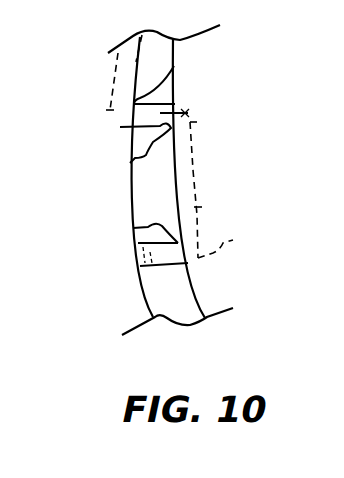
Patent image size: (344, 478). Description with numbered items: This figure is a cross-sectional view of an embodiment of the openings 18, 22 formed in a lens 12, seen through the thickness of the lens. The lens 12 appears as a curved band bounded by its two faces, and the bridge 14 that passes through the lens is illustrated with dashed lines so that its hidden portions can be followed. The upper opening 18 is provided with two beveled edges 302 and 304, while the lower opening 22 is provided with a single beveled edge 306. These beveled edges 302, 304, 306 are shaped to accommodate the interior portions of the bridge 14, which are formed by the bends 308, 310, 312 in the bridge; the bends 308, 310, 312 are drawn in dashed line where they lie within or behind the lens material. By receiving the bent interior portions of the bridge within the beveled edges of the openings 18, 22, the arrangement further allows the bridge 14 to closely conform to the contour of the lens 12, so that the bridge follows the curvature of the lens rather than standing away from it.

The lens 12 is at (233, 282).
The bridge 14 is at (200, 205).
The opening 18 is at (225, 90).
The opening 22 is at (138, 255).
The beveled edge 302 is at (200, 60).
The beveled edge 304 is at (97, 172).
The beveled edge 306 is at (100, 225).
The bend 308 is at (110, 112).
The bend 310 is at (222, 137).
The bend 312 is at (240, 238).